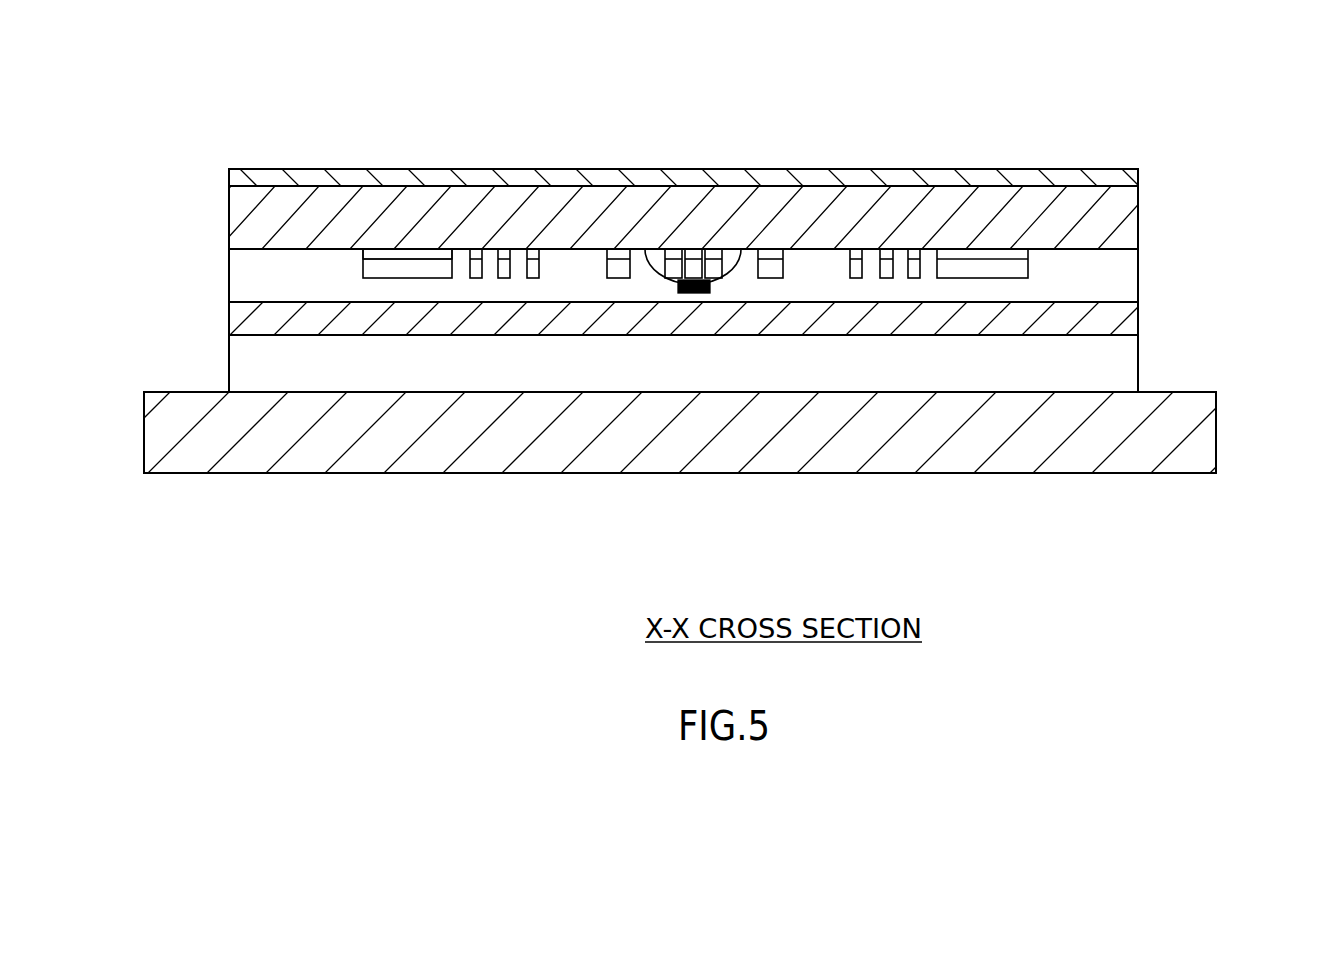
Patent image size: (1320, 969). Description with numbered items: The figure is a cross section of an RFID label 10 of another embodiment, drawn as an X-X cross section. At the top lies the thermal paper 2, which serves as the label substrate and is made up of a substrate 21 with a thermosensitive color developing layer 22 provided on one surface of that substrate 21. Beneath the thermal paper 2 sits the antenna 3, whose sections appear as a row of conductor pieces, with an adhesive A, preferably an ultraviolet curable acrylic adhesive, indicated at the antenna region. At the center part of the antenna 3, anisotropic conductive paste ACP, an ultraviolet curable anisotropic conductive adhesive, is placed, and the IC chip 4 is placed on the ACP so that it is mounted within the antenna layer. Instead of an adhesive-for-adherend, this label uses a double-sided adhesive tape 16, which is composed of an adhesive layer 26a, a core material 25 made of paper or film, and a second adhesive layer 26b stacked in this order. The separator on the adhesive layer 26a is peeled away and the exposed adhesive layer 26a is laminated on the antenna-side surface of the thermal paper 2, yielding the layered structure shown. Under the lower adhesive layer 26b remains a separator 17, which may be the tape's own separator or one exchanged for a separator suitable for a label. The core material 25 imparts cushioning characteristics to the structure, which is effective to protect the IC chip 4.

The RFID label 10 is at (589, 90).
The thermal paper 2 is at (1236, 159).
The thermosensitive color developing layer 22 is at (1137, 183).
The substrate 21 is at (1137, 220).
The double-sided adhesive tape 16 is at (1254, 260).
The adhesive layer 26a is at (1137, 276).
The core material 25 is at (1137, 322).
The adhesive layer 26b is at (1137, 361).
The separator 17 is at (1216, 420).
The antenna 3 is at (413, 270).
The adhesive A is at (417, 255).
The anisotropic conductive paste ACP is at (692, 268).
The IC chip 4 is at (692, 293).